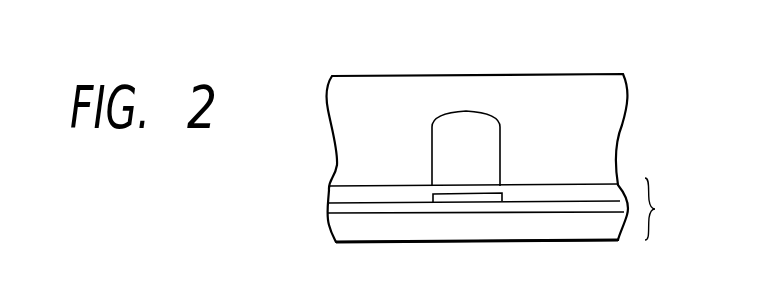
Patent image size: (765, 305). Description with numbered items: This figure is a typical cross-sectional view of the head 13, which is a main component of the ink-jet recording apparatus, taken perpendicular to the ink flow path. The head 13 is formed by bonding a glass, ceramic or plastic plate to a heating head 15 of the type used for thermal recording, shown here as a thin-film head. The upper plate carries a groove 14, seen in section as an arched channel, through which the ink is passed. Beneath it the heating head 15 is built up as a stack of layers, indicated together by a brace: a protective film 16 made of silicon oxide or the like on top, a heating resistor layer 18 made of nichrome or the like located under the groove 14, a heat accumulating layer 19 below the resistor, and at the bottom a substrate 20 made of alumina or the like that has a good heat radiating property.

The head 13 is at (372, 75).
The groove 14 is at (464, 111).
The heating head 15 is at (666, 209).
The protective film 16 is at (551, 186).
The heating resistor layer 18 is at (455, 199).
The heat accumulating layer 19 is at (588, 206).
The substrate 20 is at (554, 232).